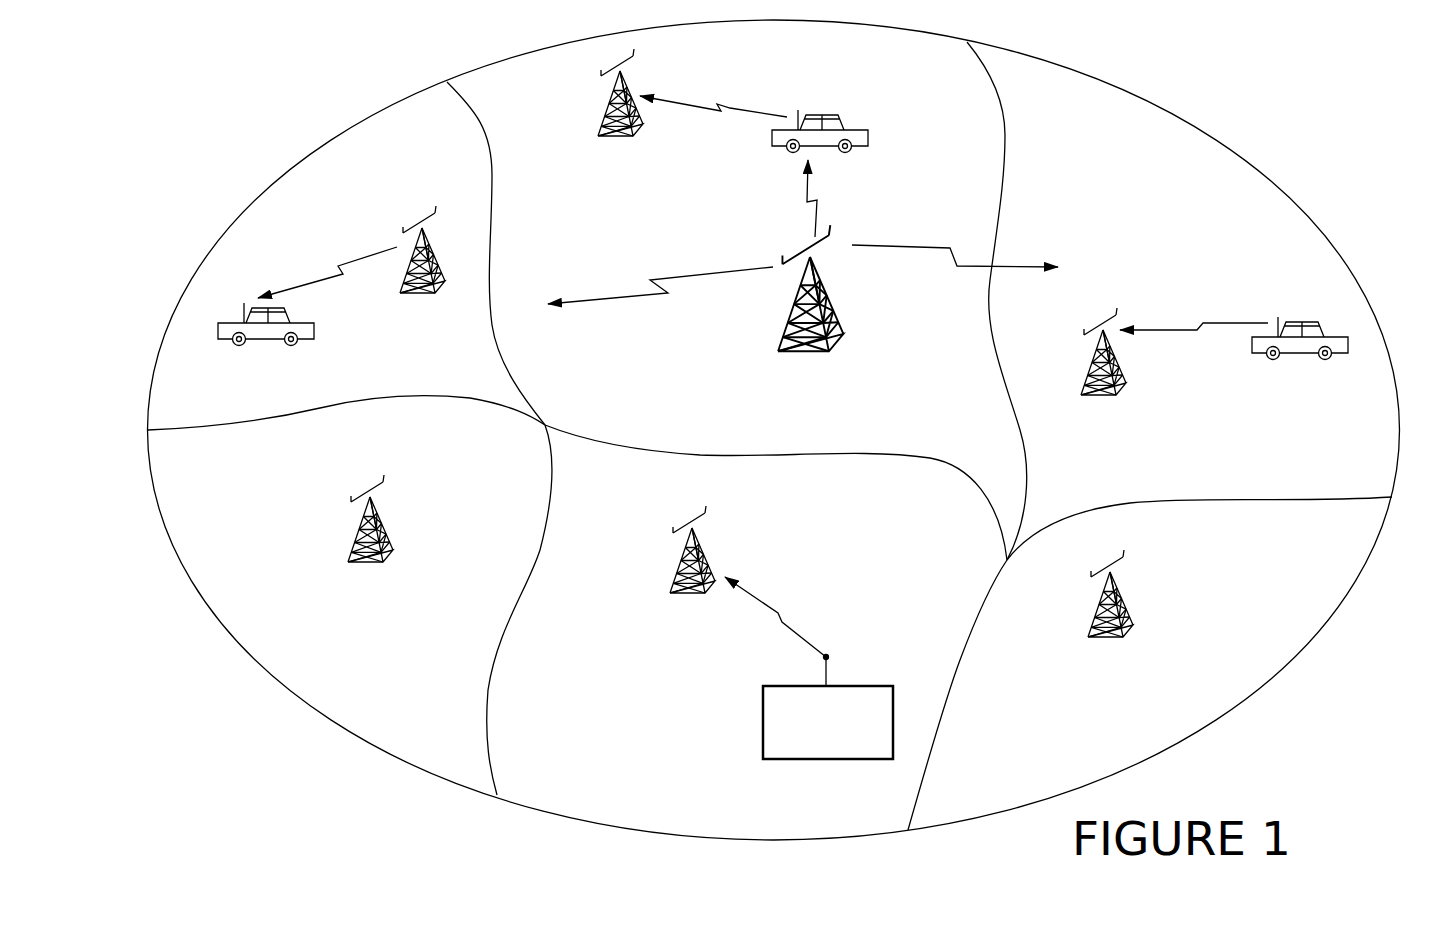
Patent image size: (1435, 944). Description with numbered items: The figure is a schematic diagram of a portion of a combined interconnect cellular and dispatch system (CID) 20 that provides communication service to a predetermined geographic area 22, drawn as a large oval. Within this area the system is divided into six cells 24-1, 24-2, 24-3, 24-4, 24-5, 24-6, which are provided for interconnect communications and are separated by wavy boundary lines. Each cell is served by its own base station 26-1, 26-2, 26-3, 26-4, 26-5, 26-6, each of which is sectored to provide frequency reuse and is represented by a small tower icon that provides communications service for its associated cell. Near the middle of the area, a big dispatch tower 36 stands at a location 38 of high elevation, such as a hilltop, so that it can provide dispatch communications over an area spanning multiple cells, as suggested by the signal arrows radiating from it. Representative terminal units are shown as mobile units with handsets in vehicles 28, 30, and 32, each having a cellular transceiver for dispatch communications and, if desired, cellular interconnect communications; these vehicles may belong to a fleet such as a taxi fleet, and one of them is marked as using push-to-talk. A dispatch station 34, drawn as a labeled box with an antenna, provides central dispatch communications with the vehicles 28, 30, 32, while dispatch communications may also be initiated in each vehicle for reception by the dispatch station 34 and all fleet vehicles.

The combined interconnect cellular and dispatch system 20 is at (1097, 52).
The predetermined geographic area 22 is at (1210, 135).
The cell 24-1 is at (1260, 235).
The cell 24-2 is at (1265, 645).
The cell 24-3 is at (558, 790).
The cell 24-4 is at (278, 648).
The cell 24-5 is at (323, 182).
The cell 24-6 is at (530, 85).
The base station 26-1 is at (1085, 368).
The base station 26-2 is at (1122, 597).
The base station 26-3 is at (680, 568).
The base station 26-4 is at (358, 528).
The base station 26-5 is at (442, 265).
The base station 26-6 is at (630, 90).
The vehicle 28 is at (1345, 357).
The vehicle 30 is at (230, 342).
The vehicle 32 is at (855, 128).
The dispatch station 34 is at (780, 760).
The dispatch tower 36 is at (828, 303).
The location 38 is at (805, 355).